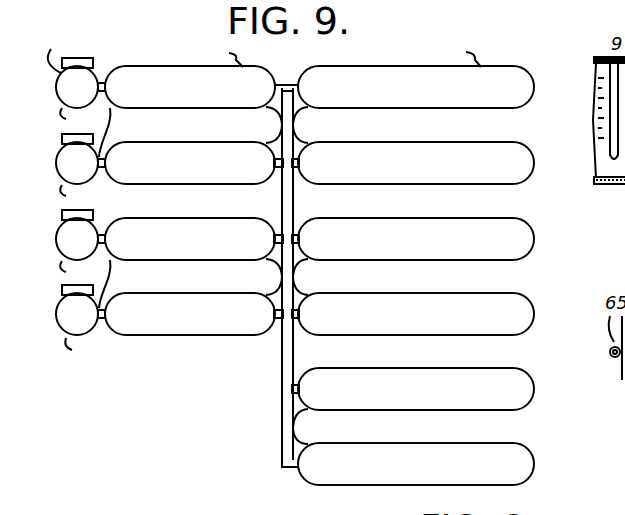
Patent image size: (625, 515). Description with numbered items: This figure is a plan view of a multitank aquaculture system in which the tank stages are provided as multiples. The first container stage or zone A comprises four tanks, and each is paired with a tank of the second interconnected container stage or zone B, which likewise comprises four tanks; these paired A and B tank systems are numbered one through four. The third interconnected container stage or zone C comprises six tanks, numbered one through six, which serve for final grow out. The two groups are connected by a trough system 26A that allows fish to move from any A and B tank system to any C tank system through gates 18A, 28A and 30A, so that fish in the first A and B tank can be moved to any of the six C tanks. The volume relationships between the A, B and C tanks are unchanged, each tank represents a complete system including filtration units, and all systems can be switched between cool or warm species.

The first container stage or zone A is at (63, 337).
The second interconnected container stage or zone B is at (140, 338).
The third interconnected container stage or zone C is at (310, 484).
The gate 18A is at (100, 110).
The trough system 26A is at (283, 359).
The gate 28A is at (270, 115).
The gate 30A is at (304, 114).